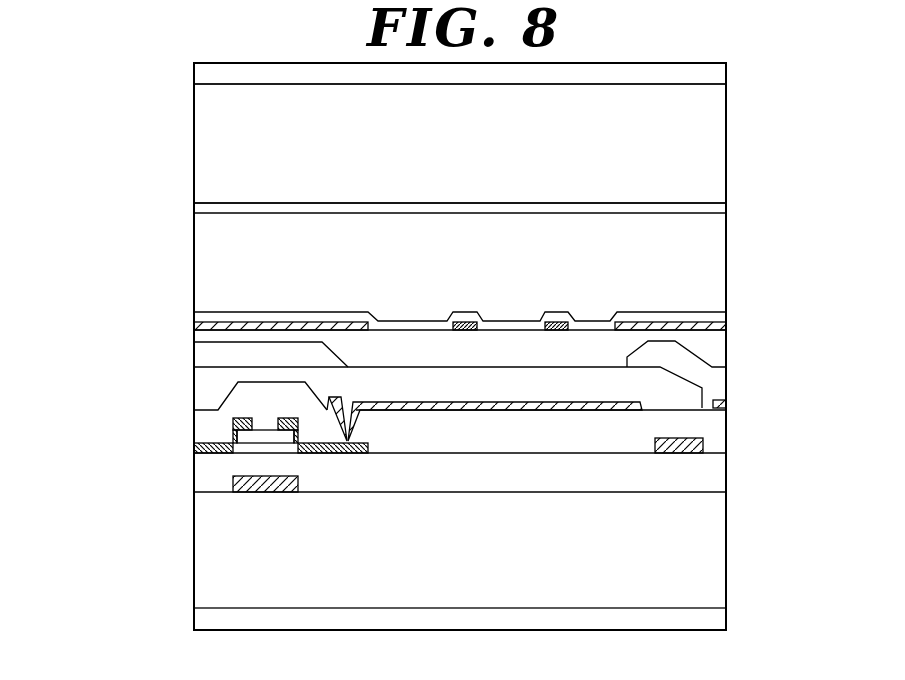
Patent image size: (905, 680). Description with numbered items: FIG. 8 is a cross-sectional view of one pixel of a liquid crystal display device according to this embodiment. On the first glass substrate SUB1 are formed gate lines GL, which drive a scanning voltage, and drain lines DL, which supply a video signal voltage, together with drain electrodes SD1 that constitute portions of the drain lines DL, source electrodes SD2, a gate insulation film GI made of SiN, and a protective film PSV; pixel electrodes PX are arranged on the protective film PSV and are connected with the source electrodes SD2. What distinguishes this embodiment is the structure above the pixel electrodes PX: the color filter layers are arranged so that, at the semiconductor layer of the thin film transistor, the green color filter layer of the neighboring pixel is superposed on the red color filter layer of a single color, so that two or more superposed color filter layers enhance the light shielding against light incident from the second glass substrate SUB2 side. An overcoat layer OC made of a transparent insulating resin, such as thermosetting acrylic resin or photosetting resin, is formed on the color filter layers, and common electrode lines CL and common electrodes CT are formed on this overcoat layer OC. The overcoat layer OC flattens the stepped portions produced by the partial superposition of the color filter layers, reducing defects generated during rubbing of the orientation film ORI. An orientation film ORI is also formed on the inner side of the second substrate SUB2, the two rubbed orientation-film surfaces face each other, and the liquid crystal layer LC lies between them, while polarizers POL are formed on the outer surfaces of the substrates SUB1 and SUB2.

The polarizer POL is at (194, 73).
The second substrate SUB2 is at (194, 147).
The orientation film ORI is at (194, 203).
The liquid crystal layer LC is at (726, 229).
The overcoat layer OC is at (200, 336).
The common electrode line CL is at (275, 321).
The common electrode CT is at (548, 312).
The protective film PSV is at (718, 422).
The pixel electrode PX is at (506, 402).
The drain electrode SD1 is at (194, 448).
The source electrode SD2 is at (343, 453).
The drain line DL is at (703, 445).
The gate insulation film GI is at (710, 472).
The gate line GL is at (233, 477).
The first substrate SUB1 is at (194, 575).